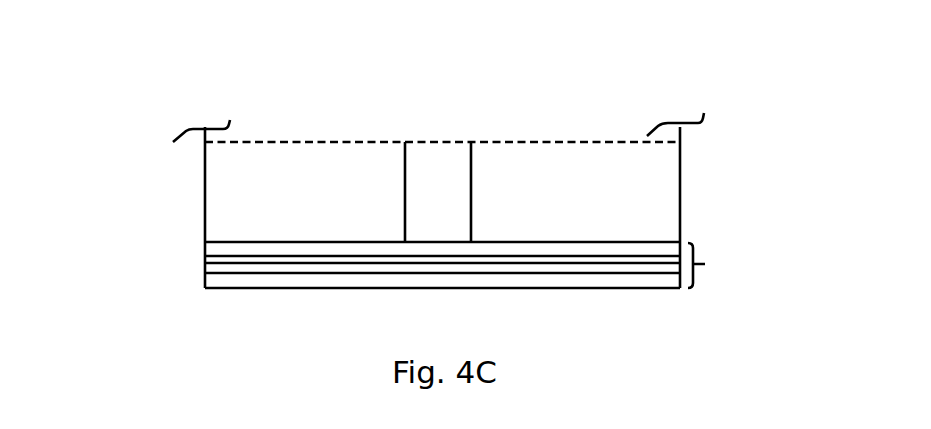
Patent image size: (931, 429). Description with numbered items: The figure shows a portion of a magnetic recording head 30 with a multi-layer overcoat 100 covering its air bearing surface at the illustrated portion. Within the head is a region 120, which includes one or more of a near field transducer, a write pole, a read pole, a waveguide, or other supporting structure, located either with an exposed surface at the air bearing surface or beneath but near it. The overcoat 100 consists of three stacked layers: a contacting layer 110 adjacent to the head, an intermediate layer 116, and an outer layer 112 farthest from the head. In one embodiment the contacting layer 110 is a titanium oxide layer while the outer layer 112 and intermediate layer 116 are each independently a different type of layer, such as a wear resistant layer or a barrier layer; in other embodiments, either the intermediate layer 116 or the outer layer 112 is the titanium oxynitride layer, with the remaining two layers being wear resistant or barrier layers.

The magnetic recording head 30 is at (442, 183).
The overcoat 100 is at (694, 277).
The contacting layer 110 is at (215, 248).
The outer layer 112 is at (222, 282).
The intermediate layer 116 is at (215, 261).
The region 120 is at (433, 170).